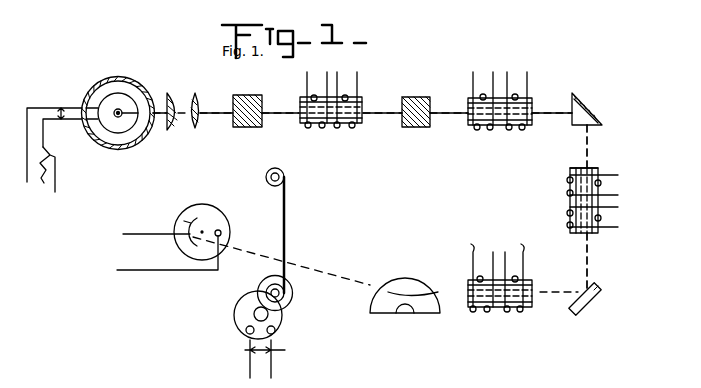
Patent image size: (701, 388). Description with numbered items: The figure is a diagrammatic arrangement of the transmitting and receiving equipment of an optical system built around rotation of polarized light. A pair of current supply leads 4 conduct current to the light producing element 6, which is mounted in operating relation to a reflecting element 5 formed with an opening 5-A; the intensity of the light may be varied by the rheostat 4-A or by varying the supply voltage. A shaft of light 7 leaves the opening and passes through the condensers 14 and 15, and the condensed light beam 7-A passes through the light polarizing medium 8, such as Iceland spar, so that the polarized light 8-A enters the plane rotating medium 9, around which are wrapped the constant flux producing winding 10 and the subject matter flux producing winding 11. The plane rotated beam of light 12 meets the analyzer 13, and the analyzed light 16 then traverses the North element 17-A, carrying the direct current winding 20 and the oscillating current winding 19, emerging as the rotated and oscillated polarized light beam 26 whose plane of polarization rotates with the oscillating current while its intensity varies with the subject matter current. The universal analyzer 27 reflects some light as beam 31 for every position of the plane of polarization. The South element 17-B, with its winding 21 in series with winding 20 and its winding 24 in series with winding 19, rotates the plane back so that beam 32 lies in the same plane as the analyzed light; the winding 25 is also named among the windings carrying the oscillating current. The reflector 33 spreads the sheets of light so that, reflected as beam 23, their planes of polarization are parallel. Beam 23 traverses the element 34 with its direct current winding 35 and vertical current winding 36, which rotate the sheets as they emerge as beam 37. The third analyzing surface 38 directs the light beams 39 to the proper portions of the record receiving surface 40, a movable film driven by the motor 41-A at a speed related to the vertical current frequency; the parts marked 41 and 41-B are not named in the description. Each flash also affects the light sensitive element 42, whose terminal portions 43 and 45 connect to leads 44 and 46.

The current supply leads 4 is at (62, 134).
The rheostat 4-A is at (50, 155).
The reflecting element 5 is at (116, 78).
The opening 5-A is at (147, 95).
The light producing element 6 is at (118, 118).
The shaft of light 7 is at (160, 116).
The condensed light beam 7-A is at (208, 116).
The light polarizing medium 8 is at (247, 101).
The polarized light 8-A is at (278, 113).
The plane rotating medium 9 is at (329, 126).
The constant flux producing winding 10 is at (307, 74).
The subject matter flux producing winding 11 is at (357, 75).
The plane rotated beam of light 12 is at (378, 113).
The analyzer 13 is at (416, 97).
The condenser 14 is at (176, 88).
The condenser 15 is at (198, 93).
The analyzed light 16 is at (445, 113).
The North element 17-A is at (497, 126).
The South element 17-B is at (570, 200).
The oscillating current winding 19 is at (527, 73).
The direct current winding 20 is at (473, 74).
The winding 21 is at (618, 228).
The beam 23 is at (543, 293).
The winding 24 is at (599, 170).
The winding 25 is at (600, 178).
The rotated and oscillated polarized light beam 26 is at (552, 113).
The universal analyzer 27 is at (588, 106).
The reflected beam 31 is at (590, 138).
The beam 32 is at (590, 265).
The reflector 33 is at (597, 299).
The element 34 is at (495, 310).
The direct current winding 35 is at (511, 269).
The vertical current winding 36 is at (460, 268).
The beam 37 is at (454, 292).
The third analyzing surface 38 is at (402, 278).
The light beams 39 is at (333, 274).
The record receiving surface 40 is at (286, 214).
The pulley 41 is at (284, 175).
The motor 41-A is at (280, 321).
The shaft spacing 41-B is at (281, 353).
The light sensitive element 42 is at (190, 214).
The terminal portion 43 is at (173, 232).
The lead 44 is at (130, 225).
The terminal portion 45 is at (221, 232).
The lead 46 is at (122, 262).